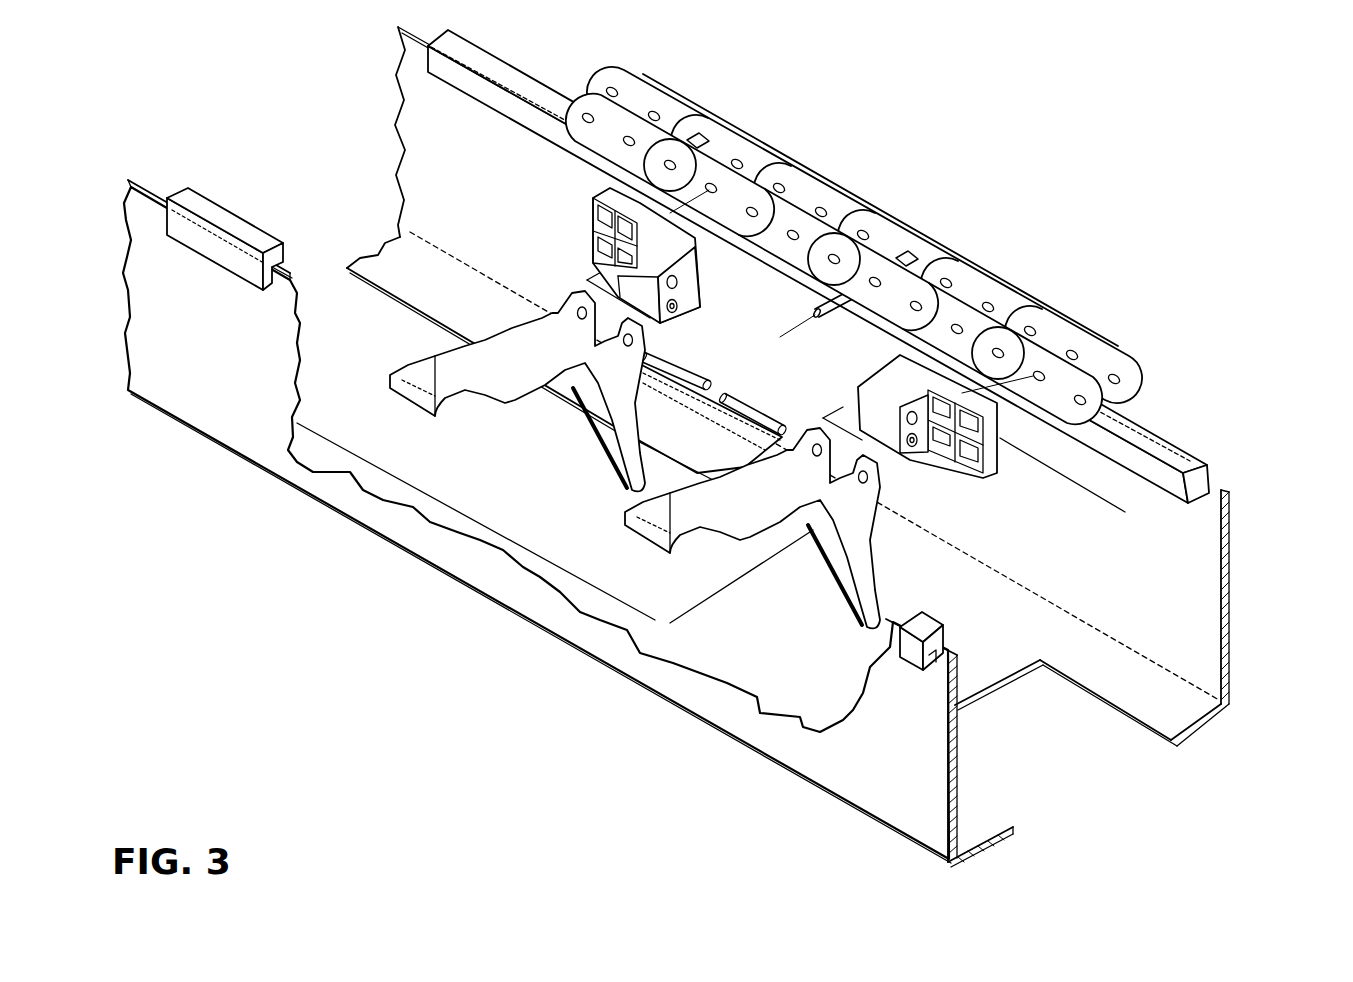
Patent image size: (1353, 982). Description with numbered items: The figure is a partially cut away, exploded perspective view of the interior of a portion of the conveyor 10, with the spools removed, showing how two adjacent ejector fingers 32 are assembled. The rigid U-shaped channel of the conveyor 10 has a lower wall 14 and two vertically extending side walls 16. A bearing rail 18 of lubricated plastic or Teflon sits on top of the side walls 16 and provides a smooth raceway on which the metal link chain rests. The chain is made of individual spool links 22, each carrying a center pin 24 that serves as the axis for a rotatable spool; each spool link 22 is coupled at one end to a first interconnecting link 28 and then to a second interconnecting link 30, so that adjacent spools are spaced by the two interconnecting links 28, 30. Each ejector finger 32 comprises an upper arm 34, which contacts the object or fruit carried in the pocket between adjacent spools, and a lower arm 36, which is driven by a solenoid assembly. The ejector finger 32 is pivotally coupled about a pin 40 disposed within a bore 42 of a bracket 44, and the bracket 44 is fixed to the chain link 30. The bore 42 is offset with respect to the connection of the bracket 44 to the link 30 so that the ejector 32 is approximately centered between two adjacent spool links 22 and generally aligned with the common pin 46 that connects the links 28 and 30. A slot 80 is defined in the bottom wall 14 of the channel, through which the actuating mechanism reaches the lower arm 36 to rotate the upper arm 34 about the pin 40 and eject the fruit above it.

The conveyor 10 is at (1215, 737).
The lower wall 14 is at (1110, 682).
The side walls 16 is at (1230, 584).
The bearing rail 18 is at (1167, 437).
The spool link 22 is at (643, 88).
The center pin 24 is at (901, 256).
The first interconnecting link 28 is at (830, 192).
The second interconnecting link 30 is at (748, 137).
The ejector finger 32 is at (470, 405).
The upper arm 34 is at (690, 457).
The lower arm 36 is at (860, 578).
The pin 40 is at (753, 407).
The bore 42 is at (675, 314).
The bracket 44 is at (590, 206).
The common pin 46 is at (1125, 512).
The slot 80 is at (1000, 820).